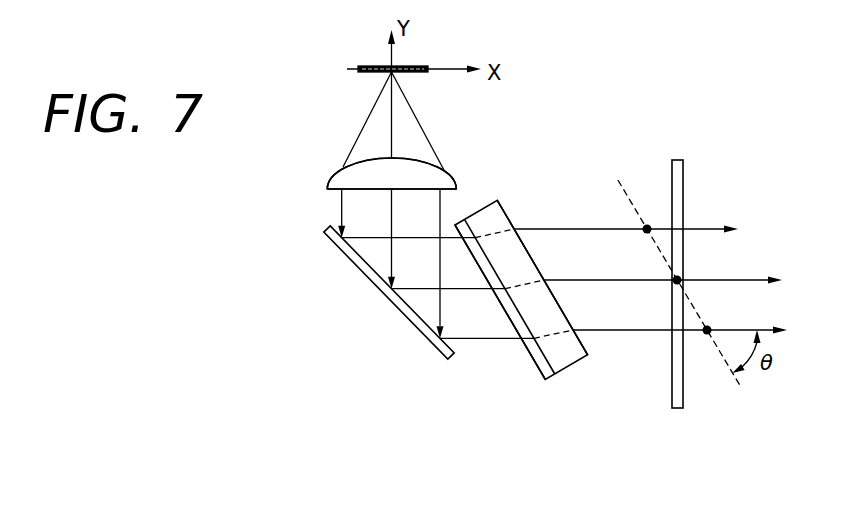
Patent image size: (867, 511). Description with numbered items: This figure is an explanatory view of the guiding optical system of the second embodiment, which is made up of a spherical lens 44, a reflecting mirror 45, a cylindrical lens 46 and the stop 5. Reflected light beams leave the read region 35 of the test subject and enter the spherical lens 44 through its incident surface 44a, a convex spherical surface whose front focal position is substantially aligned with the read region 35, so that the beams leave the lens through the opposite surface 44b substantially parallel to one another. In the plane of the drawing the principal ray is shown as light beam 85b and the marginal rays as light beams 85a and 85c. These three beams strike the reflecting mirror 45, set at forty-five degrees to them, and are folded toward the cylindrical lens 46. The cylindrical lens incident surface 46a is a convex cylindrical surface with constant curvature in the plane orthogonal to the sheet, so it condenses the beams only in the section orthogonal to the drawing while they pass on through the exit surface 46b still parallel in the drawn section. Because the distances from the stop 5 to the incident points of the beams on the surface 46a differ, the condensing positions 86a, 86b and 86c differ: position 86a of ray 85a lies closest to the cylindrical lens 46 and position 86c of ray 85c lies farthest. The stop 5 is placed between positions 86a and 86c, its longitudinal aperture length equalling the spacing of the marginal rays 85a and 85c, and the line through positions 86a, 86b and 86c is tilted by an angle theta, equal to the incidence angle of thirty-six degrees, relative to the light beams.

The stop 5 is at (675, 412).
The read region 35 is at (362, 73).
The spherical lens 44 is at (373, 176).
The incident surface 44a is at (345, 166).
The flat surface of lens 44b is at (358, 190).
The reflecting mirror 45 is at (410, 322).
The cylindrical lens 46 is at (530, 288).
The cylindrical lens incident surface 46a is at (528, 343).
The exit surface of plate 46b is at (509, 220).
The marginal ray 85a is at (577, 229).
The principal ray 85b is at (608, 280).
The marginal ray 85c is at (628, 330).
The condensing position 86a is at (650, 228).
The condensing position 86b is at (680, 279).
The condensing position 86c is at (711, 329).